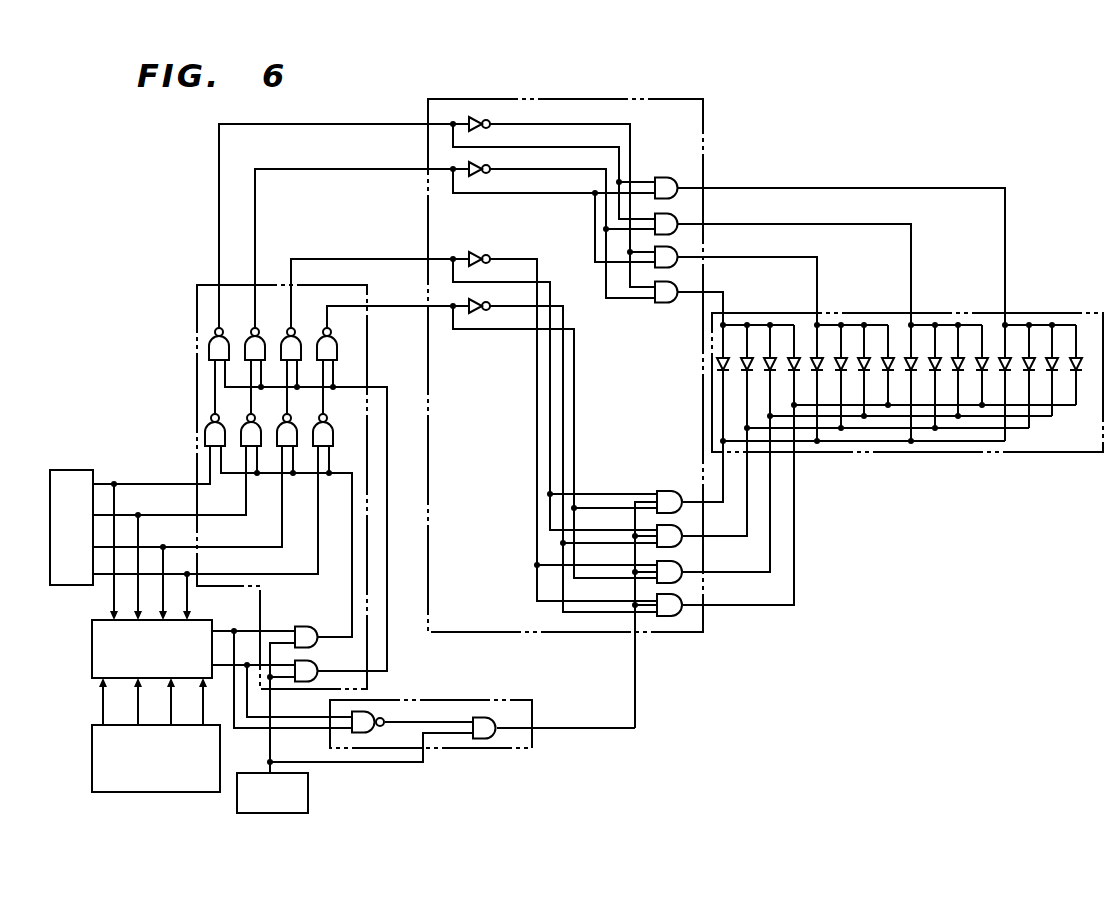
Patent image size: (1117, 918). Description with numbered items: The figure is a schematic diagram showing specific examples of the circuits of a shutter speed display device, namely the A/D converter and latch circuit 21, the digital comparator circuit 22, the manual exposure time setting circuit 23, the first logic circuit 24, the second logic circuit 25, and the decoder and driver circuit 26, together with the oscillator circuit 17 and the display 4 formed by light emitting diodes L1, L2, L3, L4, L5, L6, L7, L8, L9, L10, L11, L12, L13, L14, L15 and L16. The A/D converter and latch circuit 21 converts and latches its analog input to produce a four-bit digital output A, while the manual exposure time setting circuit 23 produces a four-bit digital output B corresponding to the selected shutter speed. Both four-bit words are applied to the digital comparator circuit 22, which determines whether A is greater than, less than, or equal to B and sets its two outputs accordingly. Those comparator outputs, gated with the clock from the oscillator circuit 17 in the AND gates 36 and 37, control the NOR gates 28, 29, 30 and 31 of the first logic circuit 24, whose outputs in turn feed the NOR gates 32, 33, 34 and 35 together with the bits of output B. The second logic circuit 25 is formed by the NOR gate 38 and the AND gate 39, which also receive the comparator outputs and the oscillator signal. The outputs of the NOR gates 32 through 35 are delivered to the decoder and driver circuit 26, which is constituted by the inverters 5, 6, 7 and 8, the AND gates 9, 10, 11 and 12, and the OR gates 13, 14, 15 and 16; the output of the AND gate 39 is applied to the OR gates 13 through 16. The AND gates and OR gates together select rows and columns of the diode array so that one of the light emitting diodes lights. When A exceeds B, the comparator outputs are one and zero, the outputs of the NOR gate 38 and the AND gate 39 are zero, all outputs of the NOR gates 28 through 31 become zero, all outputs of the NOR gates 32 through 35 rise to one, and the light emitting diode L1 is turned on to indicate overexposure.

The light emitting diode display 4 is at (1075, 313).
The inverter 5 is at (487, 120).
The inverter 6 is at (478, 172).
The inverter 7 is at (477, 255).
The inverter 8 is at (481, 310).
The AND gate 9 is at (667, 177).
The AND gate 10 is at (690, 222).
The AND gate 11 is at (690, 255).
The AND gate 12 is at (690, 290).
The OR gate 13 is at (668, 490).
The OR gate 14 is at (690, 532).
The OR gate 15 is at (690, 568).
The OR gate 16 is at (690, 601).
The oscillator circuit 17 is at (308, 790).
The A/D converter and latch circuit 21 is at (92, 780).
The digital comparator circuit 22 is at (205, 621).
The manual exposure time setting circuit 23 is at (62, 470).
The first logic circuit 24 is at (197, 323).
The second logic circuit 25 is at (532, 712).
The decoder and driver circuit 26 is at (703, 130).
The NOR gate 28 is at (211, 419).
The NOR gate 29 is at (250, 414).
The NOR gate 30 is at (288, 414).
The NOR gate 31 is at (332, 403).
The NOR gate 32 is at (238, 322).
The NOR gate 33 is at (258, 330).
The NOR gate 34 is at (293, 329).
The NOR gate 35 is at (331, 331).
The AND gate 36 is at (302, 627).
The AND gate 37 is at (305, 661).
The NOR gate 38 is at (372, 711).
The AND gate 39 is at (482, 717).
The light emitting diode L1 is at (1078, 362).
The light emitting diode L2 is at (1048, 378).
The light emitting diode L3 is at (1031, 362).
The light emitting diode L4 is at (1000, 378).
The light emitting diode L5 is at (984, 362).
The light emitting diode L6 is at (953, 378).
The light emitting diode L7 is at (937, 362).
The light emitting diode L8 is at (906, 378).
The light emitting diode L9 is at (890, 362).
The light emitting diode L10 is at (860, 378).
The light emitting diode L11 is at (843, 362).
The light emitting diode L12 is at (815, 378).
The light emitting diode L13 is at (796, 362).
The light emitting diode L14 is at (766, 372).
The light emitting diode L15 is at (749, 362).
The light emitting diode L16 is at (719, 366).